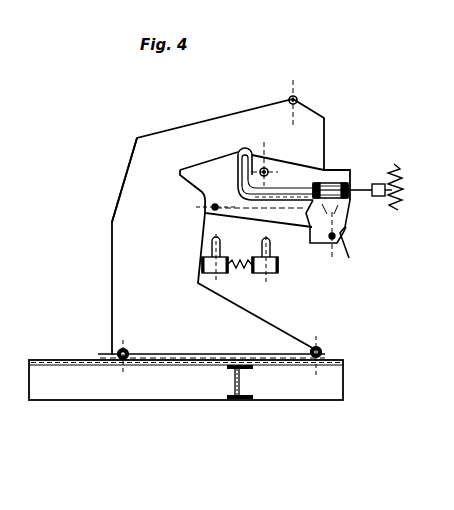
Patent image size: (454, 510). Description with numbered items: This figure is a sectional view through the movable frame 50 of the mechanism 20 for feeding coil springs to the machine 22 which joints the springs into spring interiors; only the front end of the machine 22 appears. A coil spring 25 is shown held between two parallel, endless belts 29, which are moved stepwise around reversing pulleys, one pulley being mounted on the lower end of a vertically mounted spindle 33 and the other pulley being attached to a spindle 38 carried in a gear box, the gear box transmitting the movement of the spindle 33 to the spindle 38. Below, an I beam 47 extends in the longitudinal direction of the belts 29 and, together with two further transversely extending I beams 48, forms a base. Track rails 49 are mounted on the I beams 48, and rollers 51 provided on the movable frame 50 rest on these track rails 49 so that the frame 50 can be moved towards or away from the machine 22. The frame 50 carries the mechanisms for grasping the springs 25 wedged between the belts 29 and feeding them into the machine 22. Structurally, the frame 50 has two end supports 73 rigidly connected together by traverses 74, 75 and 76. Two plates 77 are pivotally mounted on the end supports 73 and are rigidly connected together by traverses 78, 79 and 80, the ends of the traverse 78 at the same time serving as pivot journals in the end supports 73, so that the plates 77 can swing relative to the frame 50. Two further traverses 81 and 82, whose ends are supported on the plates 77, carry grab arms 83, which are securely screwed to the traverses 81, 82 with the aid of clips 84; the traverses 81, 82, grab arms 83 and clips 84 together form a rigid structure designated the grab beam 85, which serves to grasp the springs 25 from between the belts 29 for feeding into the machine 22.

The mechanism 20 is at (322, 78).
The machine 22 is at (393, 172).
The coil spring 25 is at (236, 262).
The endless belts 29 is at (210, 273).
The spindle 33 is at (271, 249).
The spindle 38 is at (218, 250).
The I beam 47 is at (238, 399).
The I beams 48 is at (146, 394).
The track rails 49 is at (338, 360).
The movable frame 50 is at (118, 178).
The rollers 51 is at (119, 352).
The end supports 73 is at (120, 258).
The traverse 74 is at (299, 100).
The traverse 75 is at (128, 350).
The traverse 76 is at (311, 352).
The plates 77 is at (296, 173).
The traverse 78 is at (338, 244).
The traverse 79 is at (203, 214).
The traverse 80 is at (266, 170).
The traverse 81 is at (313, 200).
The traverse 82 is at (350, 199).
The grab arms 83 is at (339, 181).
The clips 84 is at (352, 205).
The grab beam 85 is at (326, 183).